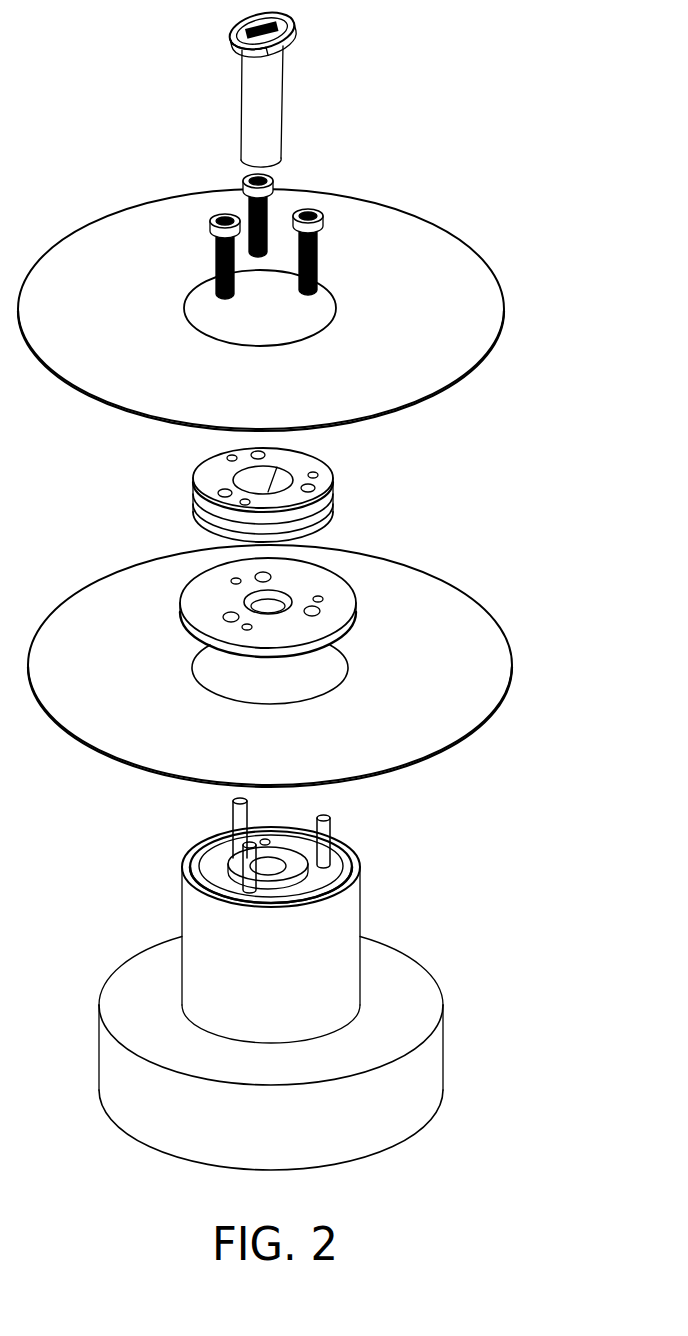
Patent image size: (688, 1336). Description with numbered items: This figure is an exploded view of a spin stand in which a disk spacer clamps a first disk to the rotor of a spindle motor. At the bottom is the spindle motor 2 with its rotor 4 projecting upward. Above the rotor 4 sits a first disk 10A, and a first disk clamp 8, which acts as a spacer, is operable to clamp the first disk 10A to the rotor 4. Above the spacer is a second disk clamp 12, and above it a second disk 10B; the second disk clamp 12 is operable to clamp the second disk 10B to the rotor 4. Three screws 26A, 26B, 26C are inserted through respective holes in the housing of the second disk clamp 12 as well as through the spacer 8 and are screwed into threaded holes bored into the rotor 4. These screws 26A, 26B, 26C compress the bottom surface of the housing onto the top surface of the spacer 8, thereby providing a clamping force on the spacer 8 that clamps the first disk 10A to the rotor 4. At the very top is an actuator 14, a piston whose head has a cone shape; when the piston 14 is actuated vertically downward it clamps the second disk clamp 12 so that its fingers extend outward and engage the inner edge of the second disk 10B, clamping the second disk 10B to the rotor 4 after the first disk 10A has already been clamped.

The spindle motor 2 is at (122, 906).
The rotor 4 is at (362, 897).
The first disk clamp 8 is at (356, 604).
The first disk 10A is at (512, 660).
The second disk 10B is at (504, 305).
The second disk clamp 12 is at (347, 469).
The actuator 14 is at (283, 88).
The screw 26A is at (322, 217).
The screw 26B is at (246, 183).
The screw 26C is at (212, 227).